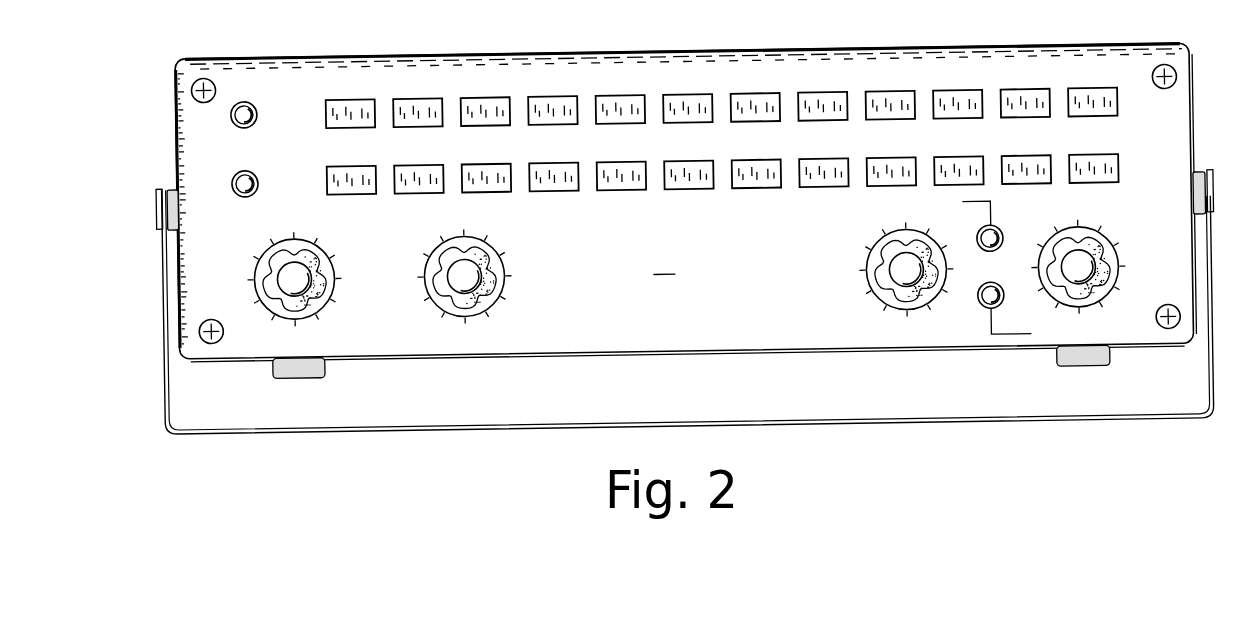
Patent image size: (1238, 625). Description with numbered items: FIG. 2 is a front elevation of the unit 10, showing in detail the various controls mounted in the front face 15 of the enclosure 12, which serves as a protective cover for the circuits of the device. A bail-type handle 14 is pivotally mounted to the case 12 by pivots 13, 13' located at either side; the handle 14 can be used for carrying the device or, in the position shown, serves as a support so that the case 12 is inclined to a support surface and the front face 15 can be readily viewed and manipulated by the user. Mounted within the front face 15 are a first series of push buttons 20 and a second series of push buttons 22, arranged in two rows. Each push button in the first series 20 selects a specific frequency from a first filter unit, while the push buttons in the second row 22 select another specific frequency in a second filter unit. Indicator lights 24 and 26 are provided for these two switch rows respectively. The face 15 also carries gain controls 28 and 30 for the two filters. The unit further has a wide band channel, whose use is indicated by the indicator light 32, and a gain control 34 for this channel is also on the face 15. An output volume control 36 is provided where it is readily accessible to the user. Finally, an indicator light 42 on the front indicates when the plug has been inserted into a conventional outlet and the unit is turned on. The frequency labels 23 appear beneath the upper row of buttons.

The unit 10 is at (306, 450).
The enclosure 12 is at (176, 117).
The pivot 13 is at (142, 203).
The pivot 13' is at (1215, 158).
The bail-type handle 14 is at (520, 431).
The front face 15 is at (664, 266).
The first series of push buttons 20 is at (325, 112).
The second series of push buttons 22 is at (325, 185).
The center frequency labels 23 is at (368, 148).
The indicator light 24 is at (237, 108).
The indicator light 26 is at (231, 185).
The gain control 28 is at (277, 320).
The gain control 30 is at (447, 320).
The indicator light 32 is at (975, 258).
The gain control 34 is at (910, 322).
The output volume control 36 is at (1113, 269).
The indicator light 42 is at (984, 322).